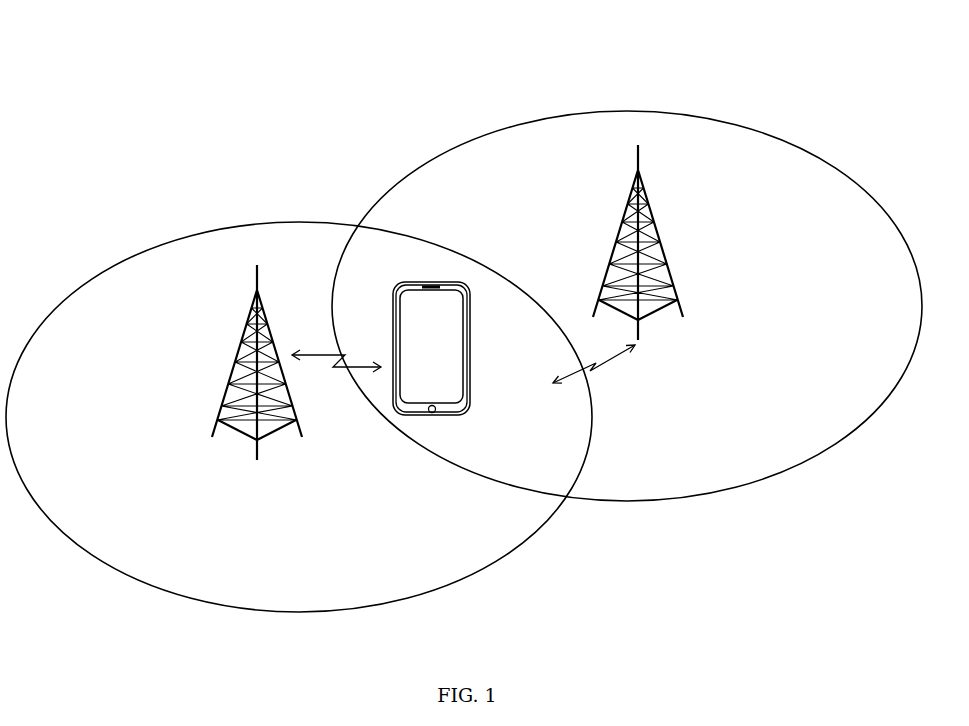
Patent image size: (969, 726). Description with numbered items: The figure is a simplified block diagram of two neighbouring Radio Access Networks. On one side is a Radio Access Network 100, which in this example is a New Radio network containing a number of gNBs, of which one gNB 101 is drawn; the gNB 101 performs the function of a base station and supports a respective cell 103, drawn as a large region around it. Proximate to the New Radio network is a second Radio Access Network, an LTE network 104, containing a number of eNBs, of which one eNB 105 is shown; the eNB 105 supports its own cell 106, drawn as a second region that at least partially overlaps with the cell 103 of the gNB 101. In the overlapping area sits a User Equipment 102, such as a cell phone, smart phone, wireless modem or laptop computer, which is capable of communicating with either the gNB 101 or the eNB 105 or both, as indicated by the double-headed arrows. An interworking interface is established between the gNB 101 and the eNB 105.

The Radio Access Network 100 is at (88, 596).
The gNB 101 is at (258, 268).
The User Equipment 102 is at (470, 345).
The cell 103 is at (284, 581).
The LTE network 104 is at (865, 100).
The eNB 105 is at (639, 150).
The cell 106 is at (611, 469).